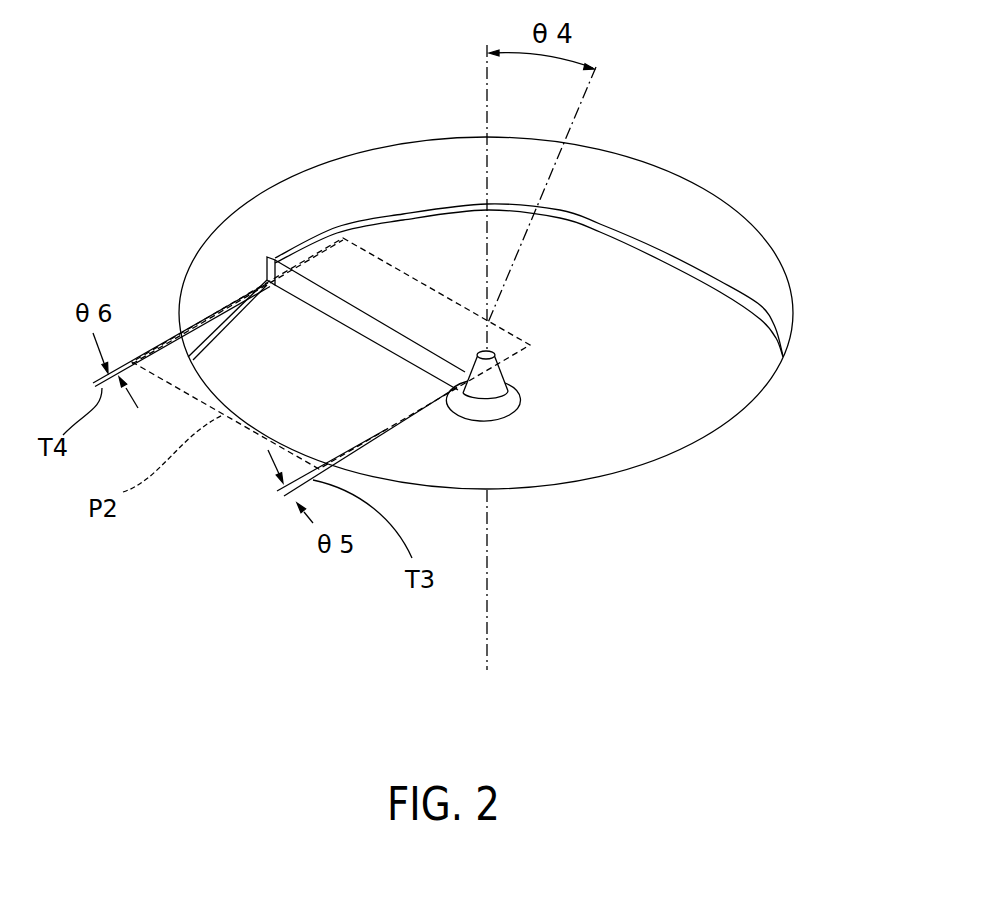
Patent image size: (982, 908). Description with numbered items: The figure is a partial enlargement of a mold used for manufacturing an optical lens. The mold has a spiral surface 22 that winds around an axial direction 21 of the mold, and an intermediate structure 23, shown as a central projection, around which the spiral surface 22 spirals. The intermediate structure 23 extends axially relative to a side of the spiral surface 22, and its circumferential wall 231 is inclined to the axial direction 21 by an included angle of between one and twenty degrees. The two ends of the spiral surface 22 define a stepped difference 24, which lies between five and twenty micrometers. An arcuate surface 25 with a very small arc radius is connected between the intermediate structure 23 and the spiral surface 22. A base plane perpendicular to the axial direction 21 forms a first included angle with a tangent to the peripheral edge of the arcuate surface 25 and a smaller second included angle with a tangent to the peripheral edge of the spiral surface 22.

The axial direction 21 is at (489, 597).
The spiral surface 22 is at (660, 384).
The intermediate structure 23 is at (517, 412).
The circumferential wall 231 is at (486, 358).
The stepped difference 24 is at (267, 268).
The arcuate surface 25 is at (517, 388).